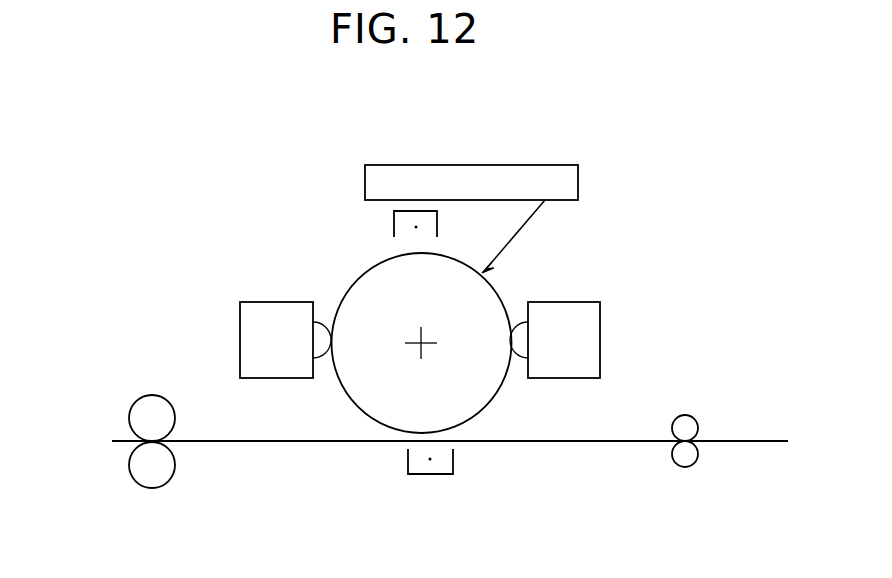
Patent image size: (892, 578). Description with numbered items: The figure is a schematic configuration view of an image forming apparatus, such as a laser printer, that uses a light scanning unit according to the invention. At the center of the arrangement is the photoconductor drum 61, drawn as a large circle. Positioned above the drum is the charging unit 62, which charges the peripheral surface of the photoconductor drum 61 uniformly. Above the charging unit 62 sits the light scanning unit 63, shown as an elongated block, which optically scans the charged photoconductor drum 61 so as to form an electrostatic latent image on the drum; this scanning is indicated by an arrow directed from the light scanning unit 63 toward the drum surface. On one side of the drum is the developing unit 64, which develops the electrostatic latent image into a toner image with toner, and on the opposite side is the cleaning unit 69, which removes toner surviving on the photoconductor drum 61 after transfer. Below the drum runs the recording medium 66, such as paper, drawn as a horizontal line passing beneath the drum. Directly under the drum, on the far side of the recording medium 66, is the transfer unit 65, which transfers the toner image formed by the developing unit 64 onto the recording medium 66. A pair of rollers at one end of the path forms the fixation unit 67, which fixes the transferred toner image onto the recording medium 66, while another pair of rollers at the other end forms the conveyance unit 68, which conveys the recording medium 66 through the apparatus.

The photoconductor drum 61 is at (355, 277).
The charging unit 62 is at (394, 222).
The light scanning unit 63 is at (553, 165).
The developing unit 64 is at (570, 302).
The transfer unit 65 is at (440, 474).
The recording medium 66 is at (645, 441).
The fixation unit 67 is at (152, 395).
The conveyance unit 68 is at (686, 467).
The cleaning unit 69 is at (240, 318).